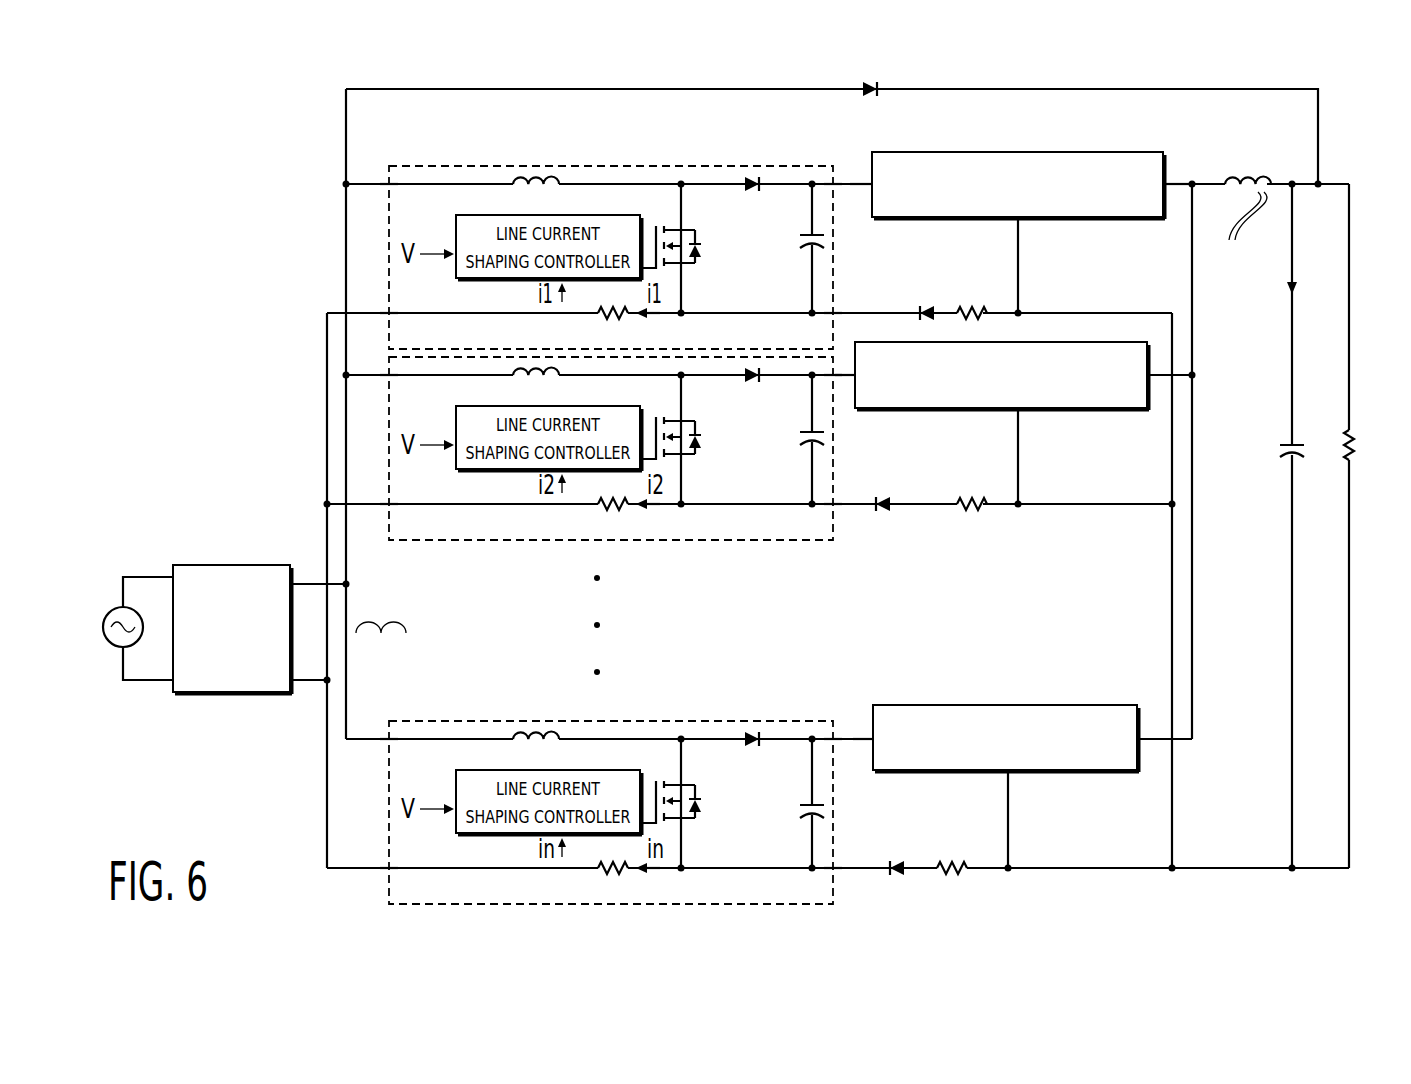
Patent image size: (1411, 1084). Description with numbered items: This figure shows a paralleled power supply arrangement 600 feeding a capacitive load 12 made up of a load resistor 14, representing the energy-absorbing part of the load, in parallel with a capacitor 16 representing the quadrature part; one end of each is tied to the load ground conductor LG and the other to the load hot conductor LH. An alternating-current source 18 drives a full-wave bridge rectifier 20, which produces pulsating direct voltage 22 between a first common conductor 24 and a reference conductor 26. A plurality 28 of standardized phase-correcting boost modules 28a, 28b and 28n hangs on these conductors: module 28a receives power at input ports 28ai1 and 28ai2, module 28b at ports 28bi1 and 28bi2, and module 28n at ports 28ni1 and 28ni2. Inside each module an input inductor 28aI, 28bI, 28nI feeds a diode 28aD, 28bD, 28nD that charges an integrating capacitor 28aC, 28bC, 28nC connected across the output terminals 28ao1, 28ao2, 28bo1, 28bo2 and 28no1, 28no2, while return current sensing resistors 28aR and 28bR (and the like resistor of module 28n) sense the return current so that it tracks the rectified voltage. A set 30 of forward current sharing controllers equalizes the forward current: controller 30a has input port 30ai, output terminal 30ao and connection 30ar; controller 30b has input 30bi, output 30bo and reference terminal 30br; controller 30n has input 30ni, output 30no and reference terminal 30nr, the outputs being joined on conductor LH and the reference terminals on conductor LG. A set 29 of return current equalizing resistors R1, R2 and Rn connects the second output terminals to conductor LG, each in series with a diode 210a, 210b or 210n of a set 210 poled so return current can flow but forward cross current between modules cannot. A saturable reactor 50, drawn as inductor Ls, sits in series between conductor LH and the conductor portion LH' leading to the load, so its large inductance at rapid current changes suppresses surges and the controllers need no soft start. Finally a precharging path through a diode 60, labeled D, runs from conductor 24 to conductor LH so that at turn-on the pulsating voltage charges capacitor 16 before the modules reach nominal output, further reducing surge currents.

The diode 60 is at (865, 86).
The diode D is at (867, 112).
The plurality of power-supply boost modules 28 is at (511, 152).
The power supply module 28a is at (685, 165).
The first power input terminal 28ai1 is at (389, 184).
The second power input terminal 28ai2 is at (389, 313).
The input inductor 28aI is at (545, 182).
The diode 28aD is at (754, 191).
The integrating capacitor 28aC is at (803, 240).
The return current sensing resistor 28aR is at (604, 320).
The first output terminal 28ao1 is at (838, 180).
The second output terminal 28ao2 is at (835, 296).
The set of current sharing controllers 30 is at (1008, 136).
The current-sharing controller 30a is at (1103, 150).
The input port 30ai is at (872, 172).
The output terminal 30ao is at (1165, 181).
The connection to ground conductor 30ar is at (1017, 225).
The saturable reactor 50 is at (1265, 180).
The inductor Ls is at (1244, 159).
The load hot conductor LH is at (1217, 304).
The conductor portion LH' is at (1311, 526).
The load ground conductor LG is at (1258, 866).
The diode 210a is at (922, 305).
The return current equalizing resistor R1 is at (974, 295).
The power supply module 28b is at (833, 349).
The first power input terminal 28bi1 is at (313, 397).
The second power input terminal 28bi2 is at (313, 464).
The input inductor 28bI is at (552, 388).
The diode 28bD is at (768, 402).
The integrating capacitor 28bC is at (778, 439).
The return current sensing resistor 28bR is at (667, 517).
The first output terminal 28bo1 is at (873, 409).
The second output terminal 28bo2 is at (874, 476).
The current-sharing controller 30b is at (1002, 392).
The input port 30bi is at (873, 344).
The output terminal 30bo is at (1137, 426).
The reference terminal 30br is at (986, 458).
The diode 210b is at (915, 525).
The return current equalizing resistor R2 is at (974, 488).
The set of unidirectional current conducting devices 210 is at (901, 552).
The set of return current equalizing resistors 29 is at (984, 531).
The capacitive load 12 is at (1282, 412).
The load resistor 14 is at (1355, 445).
The capacitor 16 is at (1282, 462).
The source of alternating current 18 is at (107, 645).
The full-wave bridge rectifier 20 is at (232, 696).
The pulsating direct voltage 22 is at (408, 633).
The first common conductor 24 is at (348, 558).
The reference conductor 26 is at (327, 520).
The power supply circuit 600 is at (291, 787).
The power supply module 28n is at (611, 790).
The first power input terminal 28ni1 is at (424, 706).
The second power input terminal 28ni2 is at (349, 884).
The input inductor 28nI is at (524, 754).
The diode 28nD is at (787, 705).
The integrating capacitor 28nC is at (781, 803).
The first output terminal 28no1 is at (873, 773).
The second output terminal 28no2 is at (874, 841).
The current-sharing controller 30n is at (1006, 718).
The input port 30ni is at (889, 704).
The output terminal 30no is at (1136, 773).
The reference terminal 30nr is at (976, 821).
The diode 210n is at (928, 883).
The return current equalizing resistor Rn is at (952, 837).